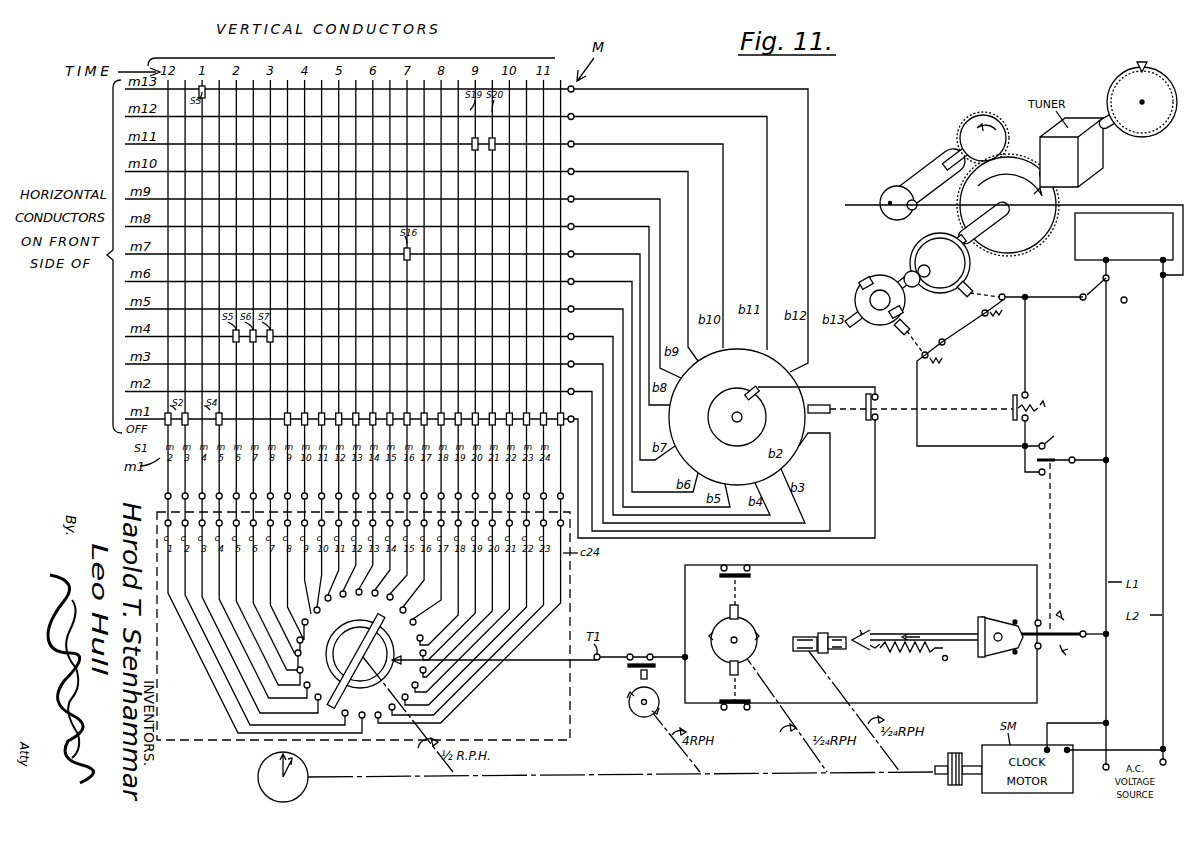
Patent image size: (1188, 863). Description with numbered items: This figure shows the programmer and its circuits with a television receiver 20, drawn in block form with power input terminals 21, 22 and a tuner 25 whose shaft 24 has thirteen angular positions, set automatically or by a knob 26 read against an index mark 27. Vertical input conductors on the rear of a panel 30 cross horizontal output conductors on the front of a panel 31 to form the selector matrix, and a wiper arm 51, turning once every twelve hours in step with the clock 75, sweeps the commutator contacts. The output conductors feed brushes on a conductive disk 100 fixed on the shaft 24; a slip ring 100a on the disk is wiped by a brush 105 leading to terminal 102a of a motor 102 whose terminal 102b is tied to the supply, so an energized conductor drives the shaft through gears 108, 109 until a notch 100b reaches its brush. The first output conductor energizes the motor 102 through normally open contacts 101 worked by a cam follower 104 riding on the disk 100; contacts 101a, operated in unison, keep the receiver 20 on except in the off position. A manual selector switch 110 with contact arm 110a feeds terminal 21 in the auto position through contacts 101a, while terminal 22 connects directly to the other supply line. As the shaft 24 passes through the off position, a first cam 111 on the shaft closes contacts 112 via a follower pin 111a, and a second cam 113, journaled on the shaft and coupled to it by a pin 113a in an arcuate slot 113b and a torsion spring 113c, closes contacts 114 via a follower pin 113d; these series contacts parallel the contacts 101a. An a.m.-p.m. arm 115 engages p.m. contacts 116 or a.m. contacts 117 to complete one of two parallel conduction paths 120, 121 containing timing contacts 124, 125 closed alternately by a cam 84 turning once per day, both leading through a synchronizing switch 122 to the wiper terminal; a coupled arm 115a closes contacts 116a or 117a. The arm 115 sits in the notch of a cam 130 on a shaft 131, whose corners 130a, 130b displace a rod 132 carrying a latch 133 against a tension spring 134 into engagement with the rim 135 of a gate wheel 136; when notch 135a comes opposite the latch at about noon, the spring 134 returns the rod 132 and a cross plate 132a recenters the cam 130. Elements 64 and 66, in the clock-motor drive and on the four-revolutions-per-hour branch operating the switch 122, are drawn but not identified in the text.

The television receiver 20 is at (1133, 212).
The power input terminal 21 is at (1108, 262).
The power input terminal 22 is at (1160, 263).
The control shaft 24 is at (980, 232).
The television tuner 25 is at (1102, 160).
The knob 26 is at (1150, 68).
The index mark 27 is at (1138, 62).
The panel 30 is at (296, 46).
The panel 31 is at (66, 286).
The wiper arm 51 is at (340, 687).
The coupling 64 is at (955, 752).
The cam 66 is at (632, 710).
The clock 75 is at (250, 784).
The cam 84 is at (746, 630).
The conductive disk 100 is at (737, 417).
The slip ring 100a is at (752, 383).
The notch 100b is at (752, 432).
The contacts 101 is at (878, 421).
The contacts 101a is at (1040, 388).
The motor 102 is at (915, 177).
The motor terminal 102a is at (884, 193).
The motor terminal 102b is at (916, 200).
The cam follower 104 is at (820, 405).
The sliding brush 105 is at (762, 392).
The gear 108 is at (984, 115).
The gear 109 is at (1015, 184).
The manual selector switch 110 is at (1064, 288).
The contact arm 110a is at (1104, 310).
The first cam 111 is at (942, 255).
The follower pin 111a is at (972, 284).
The contacts 112 is at (988, 318).
The second cam 113 is at (886, 304).
The pin 113a is at (858, 286).
The arcuate slot 113b is at (904, 279).
The torsion spring 113c is at (920, 268).
The follower pin 113d is at (909, 327).
The contacts 114 is at (927, 360).
The movable arm 115 is at (1041, 650).
The switch arm 115a is at (1052, 465).
The p.m. contacts 116 is at (1038, 650).
The contacts 116a is at (1040, 478).
The a.m. contacts 117 is at (1040, 618).
The contacts 117a is at (1055, 434).
The conduction path 120 is at (840, 697).
The conduction path 121 is at (835, 565).
The synchronizing switch 122 is at (636, 654).
The timing contacts 124 is at (740, 710).
The timing contacts 125 is at (738, 566).
The cam 130 is at (982, 634).
The corner 130a is at (990, 628).
The corner 130b is at (988, 655).
The shaft 131 is at (1000, 630).
The rod 132 is at (898, 632).
The cross plate 132a is at (976, 628).
The latch 133 is at (866, 632).
The tension spring 134 is at (912, 660).
The rim 135 is at (795, 640).
The notch 135a is at (826, 632).
The gate wheel 136 is at (805, 652).